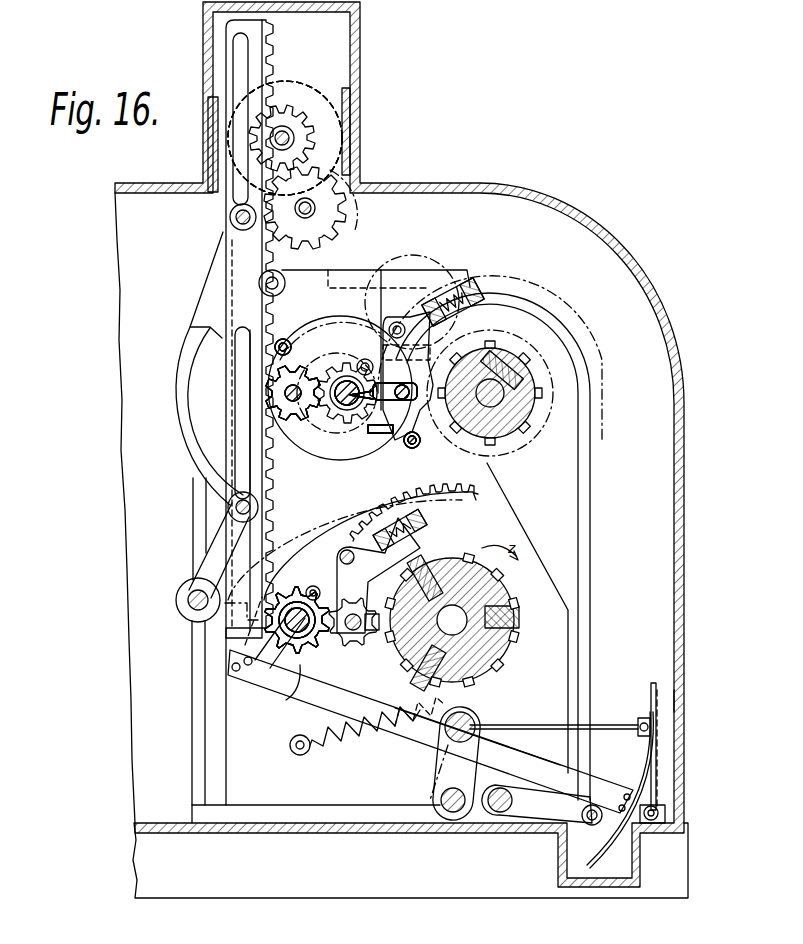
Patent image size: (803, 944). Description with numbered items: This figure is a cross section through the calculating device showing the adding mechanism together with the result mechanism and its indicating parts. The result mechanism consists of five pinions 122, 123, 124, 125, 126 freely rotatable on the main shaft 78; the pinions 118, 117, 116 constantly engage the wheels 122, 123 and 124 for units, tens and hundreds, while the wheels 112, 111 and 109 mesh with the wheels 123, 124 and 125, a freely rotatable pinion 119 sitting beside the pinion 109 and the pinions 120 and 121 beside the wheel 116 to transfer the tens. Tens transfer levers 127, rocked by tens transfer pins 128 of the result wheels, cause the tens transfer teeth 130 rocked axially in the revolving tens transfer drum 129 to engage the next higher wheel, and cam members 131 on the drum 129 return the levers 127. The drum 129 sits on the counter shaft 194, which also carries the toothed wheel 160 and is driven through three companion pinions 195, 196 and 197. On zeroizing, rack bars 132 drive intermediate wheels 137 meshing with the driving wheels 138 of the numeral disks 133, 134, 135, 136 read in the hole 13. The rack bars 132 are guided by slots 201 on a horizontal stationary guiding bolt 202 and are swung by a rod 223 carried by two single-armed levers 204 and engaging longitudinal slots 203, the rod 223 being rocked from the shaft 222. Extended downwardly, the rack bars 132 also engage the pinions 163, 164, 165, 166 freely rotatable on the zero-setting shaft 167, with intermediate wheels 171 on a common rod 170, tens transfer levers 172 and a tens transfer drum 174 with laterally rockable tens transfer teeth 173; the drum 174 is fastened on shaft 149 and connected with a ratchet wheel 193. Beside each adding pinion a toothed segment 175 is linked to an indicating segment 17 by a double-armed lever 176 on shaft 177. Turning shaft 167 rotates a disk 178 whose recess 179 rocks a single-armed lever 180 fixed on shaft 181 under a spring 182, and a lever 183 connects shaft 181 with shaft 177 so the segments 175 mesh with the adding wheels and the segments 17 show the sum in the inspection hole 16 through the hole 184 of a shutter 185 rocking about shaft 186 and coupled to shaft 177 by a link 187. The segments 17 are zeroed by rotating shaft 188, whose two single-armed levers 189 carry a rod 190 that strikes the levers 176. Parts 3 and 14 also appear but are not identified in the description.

The housing 3 is at (686, 506).
The hole 13 is at (351, 121).
The guide bracket 14 is at (208, 152).
The inspection hole 16 is at (675, 703).
The indicating segment 17 is at (642, 768).
The main shaft 78 is at (338, 404).
The pinion 109 is at (163, 379).
The wheel 111 is at (163, 379).
The wheel 112 is at (270, 392).
The wheel 116 is at (445, 433).
The pinion 117 is at (445, 433).
The pinion 118 is at (417, 436).
The pinion 119 is at (163, 379).
The pinion 120 is at (445, 433).
The pinion 121 is at (445, 433).
The pinion 122 is at (352, 412).
The pinion 123 is at (324, 441).
The pinion 124 is at (324, 441).
The pinion 125 is at (324, 441).
The pinion 126 is at (324, 441).
The tens transfer lever 127 is at (384, 412).
The tens transfer pin 128 is at (345, 378).
The tens transfer drum 129 is at (503, 425).
The tens transfer tooth 130 is at (520, 345).
The cam member 131 is at (490, 350).
The rack bar 132 is at (222, 252).
The numeral disk 133 is at (318, 99).
The numeral disk 134 is at (359, 138).
The numeral disk 135 is at (359, 138).
The numeral disk 136 is at (359, 138).
The intermediate wheel 137 is at (325, 238).
The driving wheel 138 is at (298, 142).
The shaft 149 is at (468, 624).
The toothed wheel 160 is at (500, 388).
The pinion 163 is at (262, 636).
The pinion 164 is at (167, 620).
The pinion 165 is at (167, 620).
The pinion 166 is at (167, 620).
The zero-setting shaft 167 is at (266, 675).
The common rod 170 is at (340, 641).
The intermediate wheel 171 is at (430, 731).
The tens transfer lever 172 is at (357, 550).
The tens transfer tooth 173 is at (428, 551).
The tens transfer drum 174 is at (500, 655).
The toothed segment 175 is at (316, 541).
The double-armed lever 176 is at (296, 736).
The shaft 177 is at (467, 721).
The disk 178 is at (375, 642).
The recess 179 is at (290, 700).
The single-armed lever 180 is at (415, 746).
The shaft 181 is at (450, 814).
The spring 182 is at (336, 752).
The lever 183 is at (434, 781).
The hole 184 is at (657, 723).
The shutter 185 is at (659, 750).
The shaft 186 is at (667, 813).
The link 187 is at (610, 724).
The shaft 188 is at (497, 814).
The single-armed lever 189 is at (540, 822).
The rod 190 is at (590, 826).
The ratchet wheel 193 is at (470, 585).
The counter shaft 194 is at (498, 398).
The companion pinion 195 is at (326, 336).
The companion pinion 196 is at (440, 268).
The companion pinion 197 is at (548, 368).
The slot 201 is at (249, 62).
The guiding bolt 202 is at (231, 215).
The longitudinal slot 203 is at (240, 361).
The single-armed lever 204 is at (205, 541).
The shaft 222 is at (190, 591).
The rod 223 is at (229, 508).